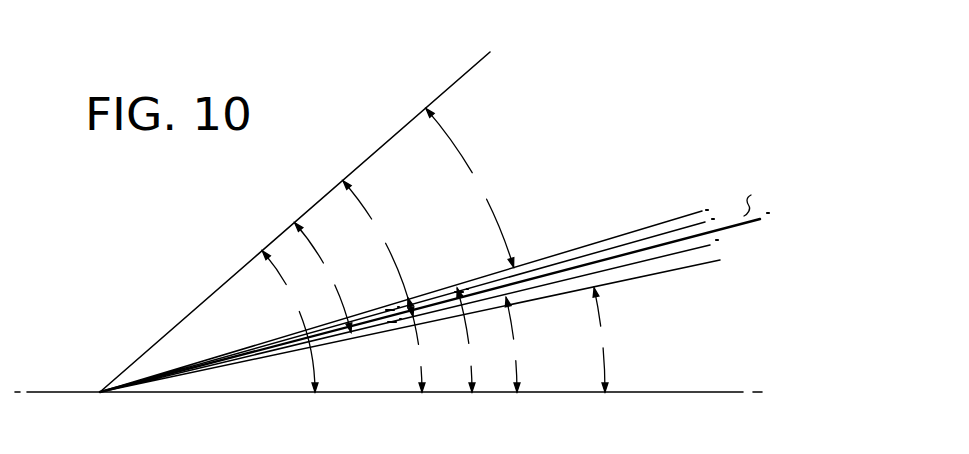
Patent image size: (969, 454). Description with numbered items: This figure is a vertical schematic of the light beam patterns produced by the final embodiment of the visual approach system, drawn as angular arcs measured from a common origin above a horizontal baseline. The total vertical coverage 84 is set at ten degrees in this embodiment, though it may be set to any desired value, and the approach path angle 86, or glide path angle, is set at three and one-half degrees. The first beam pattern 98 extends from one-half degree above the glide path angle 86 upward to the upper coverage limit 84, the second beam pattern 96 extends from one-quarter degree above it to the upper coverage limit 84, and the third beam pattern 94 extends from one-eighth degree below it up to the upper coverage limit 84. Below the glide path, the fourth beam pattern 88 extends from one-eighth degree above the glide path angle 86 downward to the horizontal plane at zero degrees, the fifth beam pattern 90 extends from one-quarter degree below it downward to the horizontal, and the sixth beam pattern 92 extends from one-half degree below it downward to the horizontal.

The total vertical coverage 84 is at (319, 375).
The approach path angle 86 is at (418, 376).
The fourth beam pattern 88 is at (474, 371).
The fifth beam pattern 90 is at (517, 373).
The sixth beam pattern 92 is at (608, 367).
The third beam pattern 94 is at (339, 298).
The second beam pattern 96 is at (364, 197).
The first beam pattern 98 is at (447, 137).